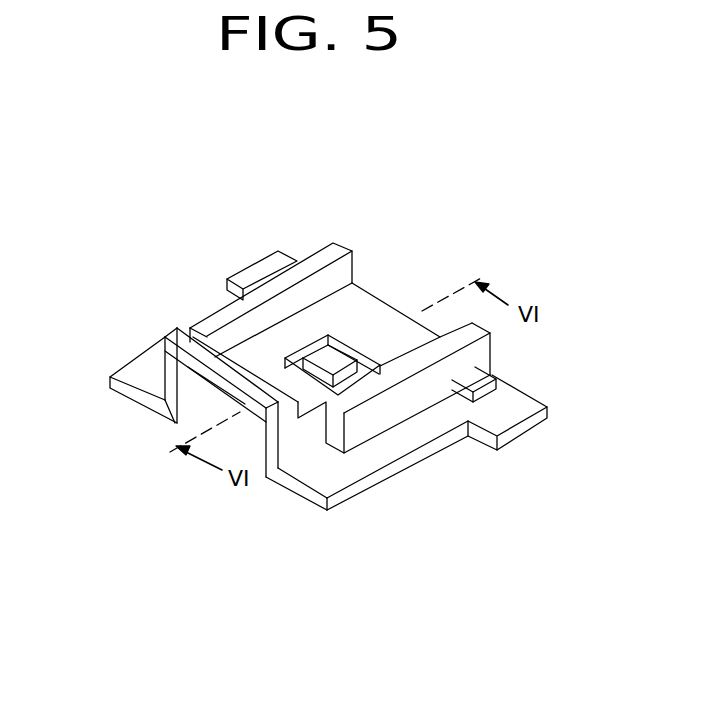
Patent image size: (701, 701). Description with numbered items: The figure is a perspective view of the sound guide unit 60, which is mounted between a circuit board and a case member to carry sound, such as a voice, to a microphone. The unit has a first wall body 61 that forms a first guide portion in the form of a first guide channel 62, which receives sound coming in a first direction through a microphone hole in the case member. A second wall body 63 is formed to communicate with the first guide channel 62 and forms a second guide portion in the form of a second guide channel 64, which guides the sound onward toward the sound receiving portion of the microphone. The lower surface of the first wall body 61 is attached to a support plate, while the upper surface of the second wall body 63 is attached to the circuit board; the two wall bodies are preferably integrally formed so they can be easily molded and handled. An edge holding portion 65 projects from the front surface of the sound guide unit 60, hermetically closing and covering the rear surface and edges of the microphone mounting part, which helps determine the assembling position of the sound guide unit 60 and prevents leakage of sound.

The sound guide unit 60 is at (168, 266).
The first wall body 61 is at (297, 441).
The first guide channel 62 is at (253, 436).
The second wall body 63 is at (357, 368).
The second guide channel 64 is at (323, 374).
The edge holding portion 65 is at (338, 272).